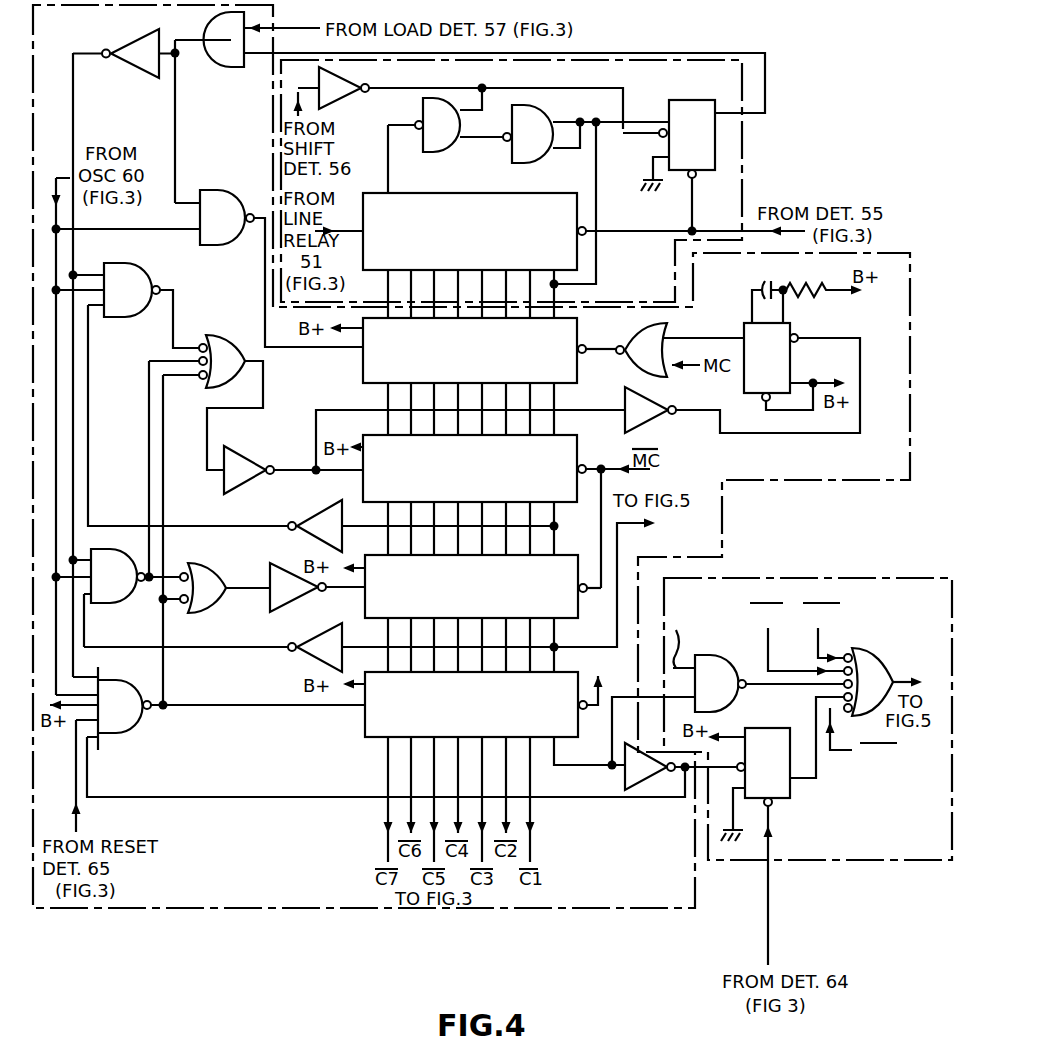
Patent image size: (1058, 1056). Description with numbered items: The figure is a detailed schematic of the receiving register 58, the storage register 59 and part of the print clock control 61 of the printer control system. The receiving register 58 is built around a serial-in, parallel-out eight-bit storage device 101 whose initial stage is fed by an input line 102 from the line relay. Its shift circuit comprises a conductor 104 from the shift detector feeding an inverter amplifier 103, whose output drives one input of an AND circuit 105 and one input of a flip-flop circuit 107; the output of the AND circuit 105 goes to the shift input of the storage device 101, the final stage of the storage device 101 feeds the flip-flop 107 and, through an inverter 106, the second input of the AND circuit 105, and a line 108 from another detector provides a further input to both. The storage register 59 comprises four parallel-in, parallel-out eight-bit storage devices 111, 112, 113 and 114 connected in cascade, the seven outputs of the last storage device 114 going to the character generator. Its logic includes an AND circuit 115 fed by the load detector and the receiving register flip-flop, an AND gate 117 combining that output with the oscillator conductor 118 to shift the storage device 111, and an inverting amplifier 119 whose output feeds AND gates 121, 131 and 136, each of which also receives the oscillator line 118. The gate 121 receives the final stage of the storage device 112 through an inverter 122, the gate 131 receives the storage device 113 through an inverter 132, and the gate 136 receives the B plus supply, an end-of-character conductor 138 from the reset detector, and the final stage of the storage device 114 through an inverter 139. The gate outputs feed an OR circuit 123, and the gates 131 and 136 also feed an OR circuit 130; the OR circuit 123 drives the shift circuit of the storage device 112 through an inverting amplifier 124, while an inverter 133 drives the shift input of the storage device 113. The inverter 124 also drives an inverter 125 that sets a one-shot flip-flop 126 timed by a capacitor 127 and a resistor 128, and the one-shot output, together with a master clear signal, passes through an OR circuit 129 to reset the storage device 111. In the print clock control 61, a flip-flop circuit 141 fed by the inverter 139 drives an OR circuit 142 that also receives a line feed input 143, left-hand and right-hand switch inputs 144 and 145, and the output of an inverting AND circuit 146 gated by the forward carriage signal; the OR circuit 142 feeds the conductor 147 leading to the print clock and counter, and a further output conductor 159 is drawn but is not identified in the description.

The receiving register 58 is at (746, 128).
The storage register 59 is at (248, 910).
The print clock control 61 is at (830, 862).
The integrated circuit storage device 101 is at (469, 228).
The input line 102 is at (350, 229).
The inverter amplifier 103 is at (344, 79).
The conductor 104 is at (298, 88).
The AND circuit 105 is at (425, 152).
The inverter 106 is at (503, 152).
The flip-flop circuit 107 is at (706, 100).
The line 108 is at (702, 227).
The integrated circuit storage device 111 is at (480, 364).
The integrated circuit storage device 112 is at (480, 481).
The integrated circuit storage device 113 is at (480, 599).
The integrated circuit storage device 114 is at (480, 714).
The AND circuit 115 is at (228, 68).
The AND gate 117 is at (248, 190).
The conductor 118 is at (60, 250).
The inverting amplifier 119 is at (130, 78).
The AND gate 121 is at (170, 250).
The inverter 122 is at (310, 504).
The OR circuit 123 is at (240, 338).
The inverting amplifier 124 is at (262, 462).
The inverter 125 is at (664, 420).
The flip-flop circuit 126 is at (793, 361).
The capacitor 127 is at (757, 282).
The resistor 128 is at (815, 284).
The OR circuit 129 is at (640, 337).
The OR circuit 130 is at (216, 575).
The AND circuit 131 is at (105, 612).
The inverter 132 is at (310, 636).
The inverter 133 is at (280, 576).
The AND gate 136 is at (118, 738).
The conductor 138 is at (87, 780).
The inverter 139 is at (650, 790).
The flip-flop circuit 141 is at (793, 790).
The OR circuit 142 is at (858, 656).
The input 143 is at (831, 714).
The input 144 is at (771, 656).
The input 145 is at (822, 632).
The inverting AND circuit 146 is at (712, 656).
The conductor 147 is at (894, 681).
The output line to FIG. 5 159 is at (628, 524).